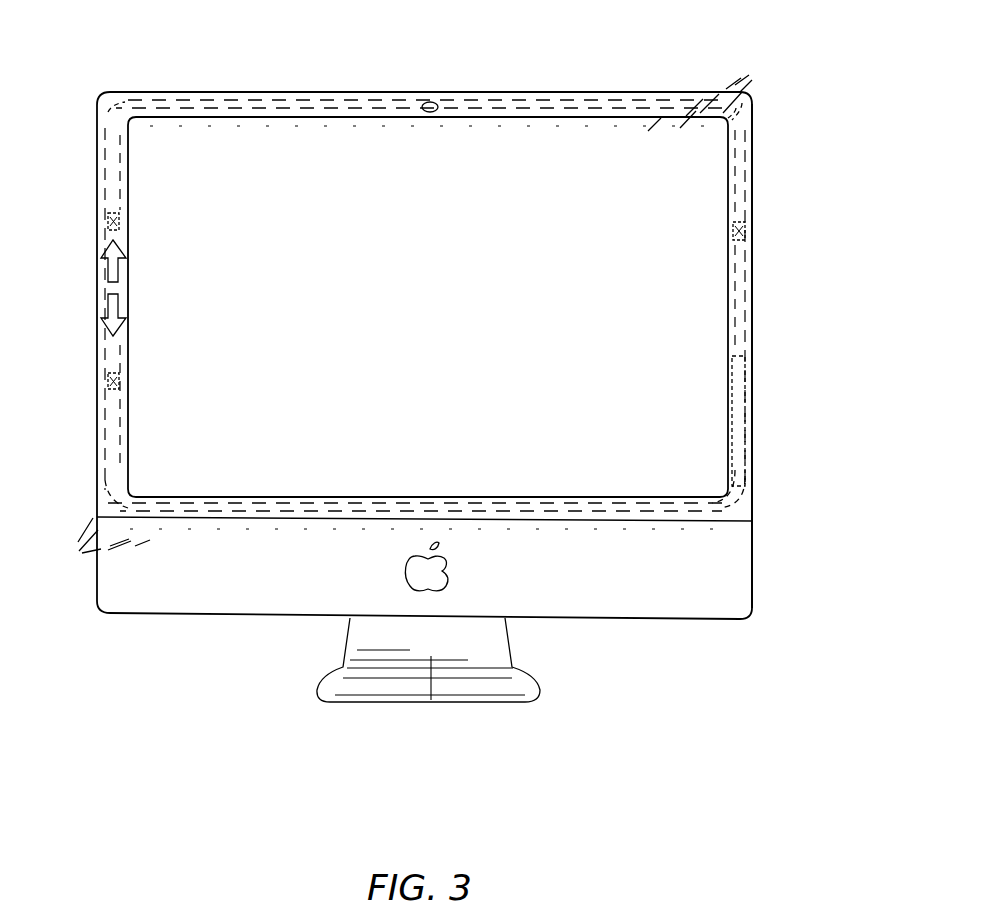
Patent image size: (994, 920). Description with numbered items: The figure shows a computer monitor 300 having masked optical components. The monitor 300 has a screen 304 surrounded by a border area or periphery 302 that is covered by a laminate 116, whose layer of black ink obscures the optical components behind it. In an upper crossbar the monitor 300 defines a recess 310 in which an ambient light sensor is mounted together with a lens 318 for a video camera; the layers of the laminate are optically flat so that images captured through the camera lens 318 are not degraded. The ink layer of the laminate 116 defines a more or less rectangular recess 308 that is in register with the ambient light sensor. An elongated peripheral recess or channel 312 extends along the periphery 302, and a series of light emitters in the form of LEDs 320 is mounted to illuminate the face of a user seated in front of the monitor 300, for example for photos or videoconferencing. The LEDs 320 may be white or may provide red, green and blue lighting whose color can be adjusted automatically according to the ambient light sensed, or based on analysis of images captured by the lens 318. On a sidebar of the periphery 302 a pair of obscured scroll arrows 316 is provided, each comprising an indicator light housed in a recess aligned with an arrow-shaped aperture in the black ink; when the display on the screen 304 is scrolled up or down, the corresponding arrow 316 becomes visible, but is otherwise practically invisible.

The monitor 300 is at (621, 82).
The border area or periphery 302 is at (740, 312).
The screen 304 is at (153, 215).
The rectangular recess 308 is at (413, 284).
The recess 310 is at (405, 126).
The elongated peripheral recess or channel 312 is at (748, 204).
The scroll arrows 316 is at (100, 334).
The lens 318 is at (434, 122).
The LEDs 320 is at (752, 81).
The laminate 116 is at (748, 324).